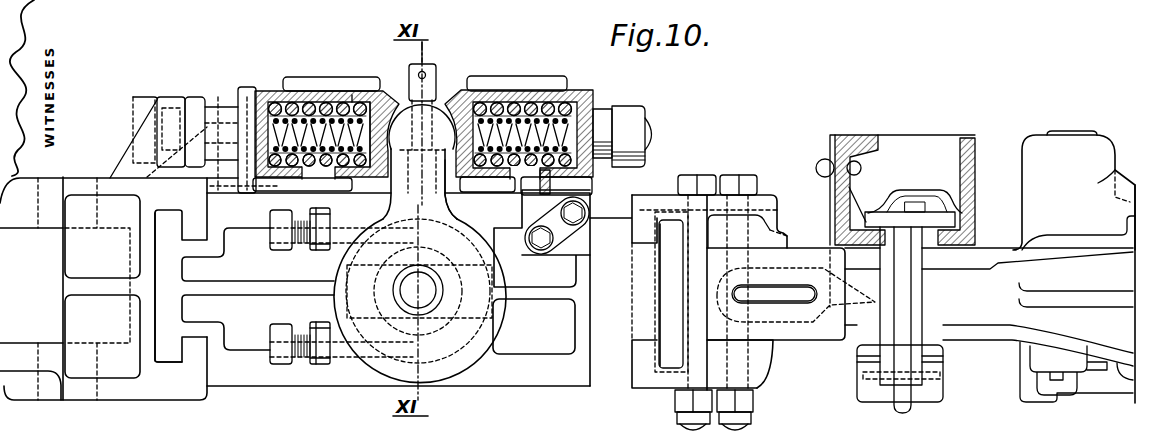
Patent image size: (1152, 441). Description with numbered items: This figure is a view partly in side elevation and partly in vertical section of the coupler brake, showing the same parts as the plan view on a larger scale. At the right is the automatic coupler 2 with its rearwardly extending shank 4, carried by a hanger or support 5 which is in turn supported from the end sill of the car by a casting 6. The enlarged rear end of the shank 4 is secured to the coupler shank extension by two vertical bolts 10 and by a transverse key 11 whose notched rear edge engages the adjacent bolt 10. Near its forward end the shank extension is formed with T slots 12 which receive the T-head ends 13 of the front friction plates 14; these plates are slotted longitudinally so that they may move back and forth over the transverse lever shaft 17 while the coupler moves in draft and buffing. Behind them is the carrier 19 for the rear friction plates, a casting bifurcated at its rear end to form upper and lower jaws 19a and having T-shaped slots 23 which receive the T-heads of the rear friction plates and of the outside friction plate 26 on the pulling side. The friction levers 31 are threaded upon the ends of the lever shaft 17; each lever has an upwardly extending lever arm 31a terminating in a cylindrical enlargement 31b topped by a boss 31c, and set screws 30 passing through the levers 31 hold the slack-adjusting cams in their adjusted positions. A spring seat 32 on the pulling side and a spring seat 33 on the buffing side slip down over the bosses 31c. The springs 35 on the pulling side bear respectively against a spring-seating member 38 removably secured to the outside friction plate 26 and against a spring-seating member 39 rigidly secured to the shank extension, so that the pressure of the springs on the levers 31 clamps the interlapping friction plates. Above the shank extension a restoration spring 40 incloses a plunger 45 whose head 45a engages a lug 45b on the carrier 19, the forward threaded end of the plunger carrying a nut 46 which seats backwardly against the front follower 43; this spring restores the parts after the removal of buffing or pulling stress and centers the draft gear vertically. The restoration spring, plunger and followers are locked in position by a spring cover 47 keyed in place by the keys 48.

The coupler 2 is at (1074, 190).
The coupler shank 4 is at (990, 294).
The hanger 5 is at (918, 299).
The casting 6 is at (830, 144).
The vertical bolts 10 is at (750, 433).
The transverse key 11 is at (787, 296).
The T slots 12 is at (668, 372).
The T-head ends 13 is at (709, 292).
The front friction plates 14 is at (673, 291).
The lever shaft 17 is at (427, 298).
The carrier 19 is at (89, 289).
The jaws 19a is at (13, 350).
The T-shaped slots 23 is at (175, 366).
The outside friction plate 26 is at (534, 326).
The set screws 30 is at (303, 251).
The friction levers 31 is at (470, 355).
The lever arm 31a is at (450, 190).
The cylindrical enlargement 31b is at (422, 146).
The boss 31c is at (437, 74).
The spring seat 32 is at (383, 90).
The spring seat 33 is at (205, 434).
The springs 35 is at (327, 103).
The spring-seating member 38 is at (587, 91).
The spring-seating member 39 is at (268, 90).
The restoration spring 40 is at (275, 431).
The front follower 43 is at (602, 116).
The plunger 45 is at (655, 133).
The plunger head 45a is at (145, 108).
The lug 45b is at (178, 86).
The nut 46 is at (644, 113).
The spring cover 47 is at (362, 434).
The keys 48 is at (383, 426).